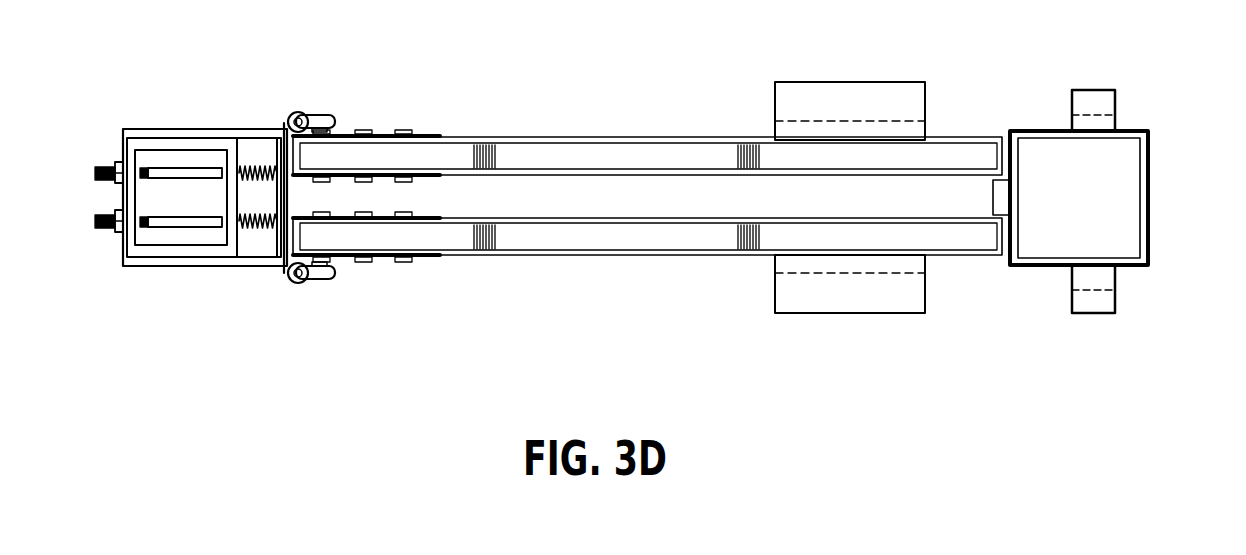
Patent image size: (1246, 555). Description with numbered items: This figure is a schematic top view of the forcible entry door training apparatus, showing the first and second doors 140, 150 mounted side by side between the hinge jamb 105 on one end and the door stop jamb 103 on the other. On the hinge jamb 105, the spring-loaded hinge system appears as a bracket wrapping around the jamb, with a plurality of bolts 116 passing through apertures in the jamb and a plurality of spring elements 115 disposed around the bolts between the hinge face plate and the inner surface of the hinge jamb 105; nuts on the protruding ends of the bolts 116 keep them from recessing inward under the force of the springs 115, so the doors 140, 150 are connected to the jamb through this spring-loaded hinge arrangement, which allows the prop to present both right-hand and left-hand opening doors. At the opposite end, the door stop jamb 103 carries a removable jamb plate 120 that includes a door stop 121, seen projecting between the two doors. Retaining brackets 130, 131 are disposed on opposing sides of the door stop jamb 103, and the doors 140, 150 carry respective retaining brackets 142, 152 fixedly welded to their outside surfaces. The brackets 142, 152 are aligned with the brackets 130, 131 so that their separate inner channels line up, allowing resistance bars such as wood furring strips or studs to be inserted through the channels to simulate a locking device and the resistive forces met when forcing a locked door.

The door stop jamb 103 is at (1042, 240).
The hinge jamb 105 is at (122, 195).
The spring elements 115 is at (257, 228).
The bolts 116 is at (162, 158).
The removable jamb plate 120 is at (1028, 128).
The door stop 121 is at (1000, 192).
The retaining bracket 130 is at (1097, 90).
The retaining bracket 131 is at (1098, 315).
The first removable door 140 is at (483, 136).
The retaining bracket 142 is at (878, 81).
The second removable door 150 is at (578, 258).
The retaining bracket 152 is at (838, 315).